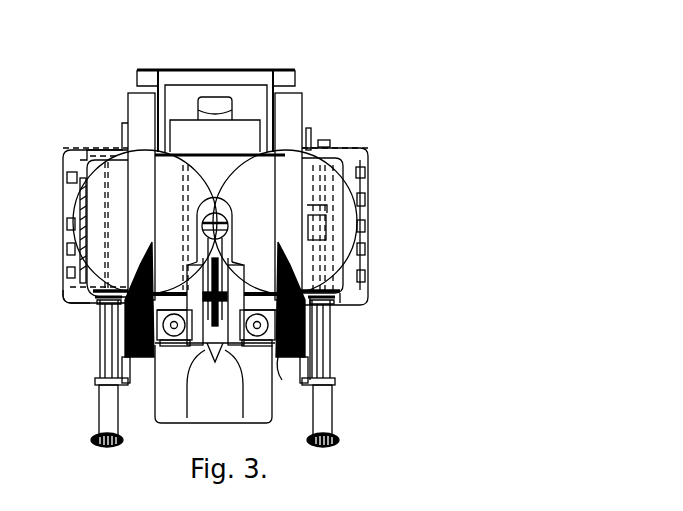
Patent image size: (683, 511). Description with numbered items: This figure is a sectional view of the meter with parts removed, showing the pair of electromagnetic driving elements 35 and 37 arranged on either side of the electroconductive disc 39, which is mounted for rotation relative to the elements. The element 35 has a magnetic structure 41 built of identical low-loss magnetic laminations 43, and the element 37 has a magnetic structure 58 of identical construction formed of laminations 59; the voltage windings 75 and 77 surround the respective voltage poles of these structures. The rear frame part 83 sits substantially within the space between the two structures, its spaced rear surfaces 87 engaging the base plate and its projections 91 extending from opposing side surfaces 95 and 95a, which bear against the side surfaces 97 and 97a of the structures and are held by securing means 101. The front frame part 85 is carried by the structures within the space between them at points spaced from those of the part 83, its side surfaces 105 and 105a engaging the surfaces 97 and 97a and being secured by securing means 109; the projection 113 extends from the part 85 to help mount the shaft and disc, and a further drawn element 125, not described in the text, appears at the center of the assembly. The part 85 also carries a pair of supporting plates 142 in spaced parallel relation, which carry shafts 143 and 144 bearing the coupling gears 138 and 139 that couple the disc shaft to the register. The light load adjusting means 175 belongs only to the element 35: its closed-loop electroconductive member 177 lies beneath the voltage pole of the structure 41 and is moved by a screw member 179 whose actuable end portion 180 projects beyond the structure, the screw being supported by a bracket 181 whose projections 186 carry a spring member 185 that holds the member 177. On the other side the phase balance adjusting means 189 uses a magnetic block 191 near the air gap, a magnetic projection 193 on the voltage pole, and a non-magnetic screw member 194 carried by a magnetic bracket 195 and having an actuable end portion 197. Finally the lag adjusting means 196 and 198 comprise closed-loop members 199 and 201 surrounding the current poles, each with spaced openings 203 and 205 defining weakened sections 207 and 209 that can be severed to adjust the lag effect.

The electromagnetic driving element 35 is at (106, 130).
The electromagnetic driving element 37 is at (369, 128).
The disc 39 is at (315, 143).
The magnetic structure 41 is at (129, 369).
The magnetic laminations 43 is at (128, 362).
The magnetic structure 58 is at (279, 368).
The magnetic laminations 59 is at (282, 358).
The voltage winding 75 is at (83, 255).
The voltage winding 77 is at (363, 187).
The frame part 83 is at (283, 68).
The frame part 85 is at (165, 415).
The rear surfaces 87 is at (222, 72).
The projections 91 is at (145, 76).
The side surface 95 is at (155, 108).
The side surface 95a is at (276, 112).
The side surface 97 is at (151, 215).
The side surface 97a is at (280, 207).
The securing means 101 is at (308, 137).
The side surface 105 is at (174, 338).
The side surface 105a is at (257, 339).
The securing means 109 is at (308, 320).
The projection 113 is at (238, 253).
The pin 125 is at (210, 210).
The coupling gear 138 is at (207, 274).
The coupling gear 139 is at (229, 228).
The supporting plates 142 is at (216, 358).
The shaft 143 is at (234, 274).
The shaft 144 is at (234, 262).
The adjusting means 175 is at (98, 395).
The electroconductive member 177 is at (107, 309).
The screw member 179 is at (107, 344).
The actuable end portion 180 is at (95, 439).
The bracket 181 is at (115, 367).
The spring member 185 is at (67, 294).
The projections 186 is at (73, 161).
The adjusting means 189 is at (333, 400).
The magnetic block 191 is at (317, 207).
The magnetic projection 193 is at (310, 226).
The screw member 194 is at (328, 352).
The magnetic bracket 195 is at (368, 152).
The lag adjusting means 196 is at (73, 303).
The actuable end portion 197 is at (341, 438).
The lag adjusting means 198 is at (368, 307).
The electroconductive member 199 is at (65, 272).
The electroconductive member 201 is at (368, 289).
The openings 203 is at (66, 178).
The openings 205 is at (368, 257).
The weakened sections 207 is at (64, 219).
The weakened sections 209 is at (369, 220).